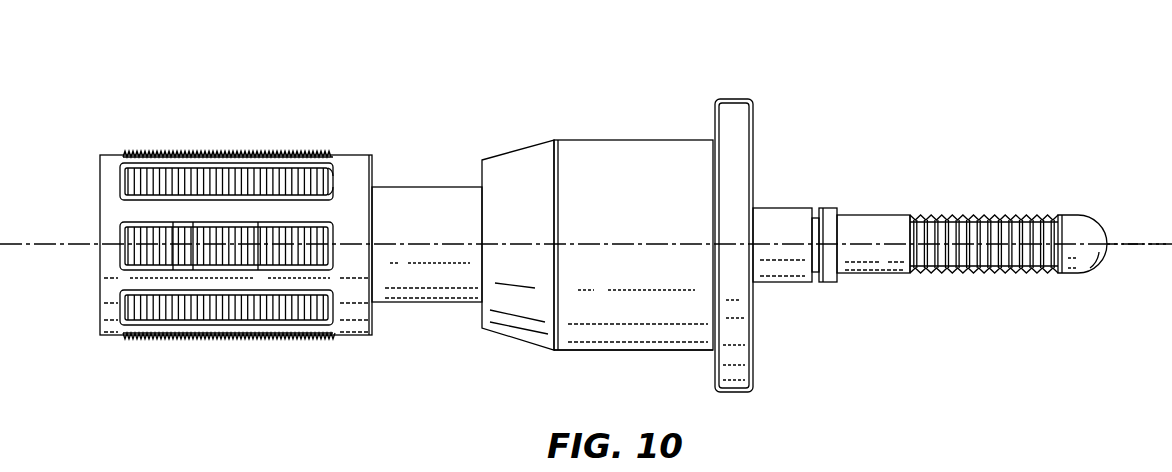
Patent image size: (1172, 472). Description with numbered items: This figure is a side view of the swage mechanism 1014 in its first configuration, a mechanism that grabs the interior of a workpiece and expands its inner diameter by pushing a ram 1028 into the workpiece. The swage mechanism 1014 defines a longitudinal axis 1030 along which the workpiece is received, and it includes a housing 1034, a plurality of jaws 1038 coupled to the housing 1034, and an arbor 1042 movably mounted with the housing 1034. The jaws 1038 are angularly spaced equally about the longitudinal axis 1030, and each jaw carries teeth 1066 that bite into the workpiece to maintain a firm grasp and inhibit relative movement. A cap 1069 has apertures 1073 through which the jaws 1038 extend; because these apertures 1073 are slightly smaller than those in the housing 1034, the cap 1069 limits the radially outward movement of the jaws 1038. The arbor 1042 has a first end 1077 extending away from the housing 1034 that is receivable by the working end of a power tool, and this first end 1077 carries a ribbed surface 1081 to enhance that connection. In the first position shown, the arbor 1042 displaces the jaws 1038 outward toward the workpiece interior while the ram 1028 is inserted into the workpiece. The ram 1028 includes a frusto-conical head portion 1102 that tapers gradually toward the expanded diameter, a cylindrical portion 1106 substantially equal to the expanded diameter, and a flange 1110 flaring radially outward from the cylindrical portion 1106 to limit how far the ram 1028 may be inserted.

The swage mechanism 1014 is at (816, 71).
The ram 1028 is at (617, 138).
The longitudinal axis 1030 is at (1128, 249).
The housing 1034 is at (422, 185).
The jaws 1038 is at (195, 150).
The arbor 1042 is at (792, 205).
The teeth 1066 is at (160, 340).
The cap 1069 is at (362, 339).
The apertures 1073 is at (342, 181).
The first end 1077 is at (1083, 228).
The ribbed surface 1081 is at (985, 215).
The frusto-conical head portion 1102 is at (512, 340).
The cylindrical portion 1106 is at (640, 352).
The flange 1110 is at (733, 392).